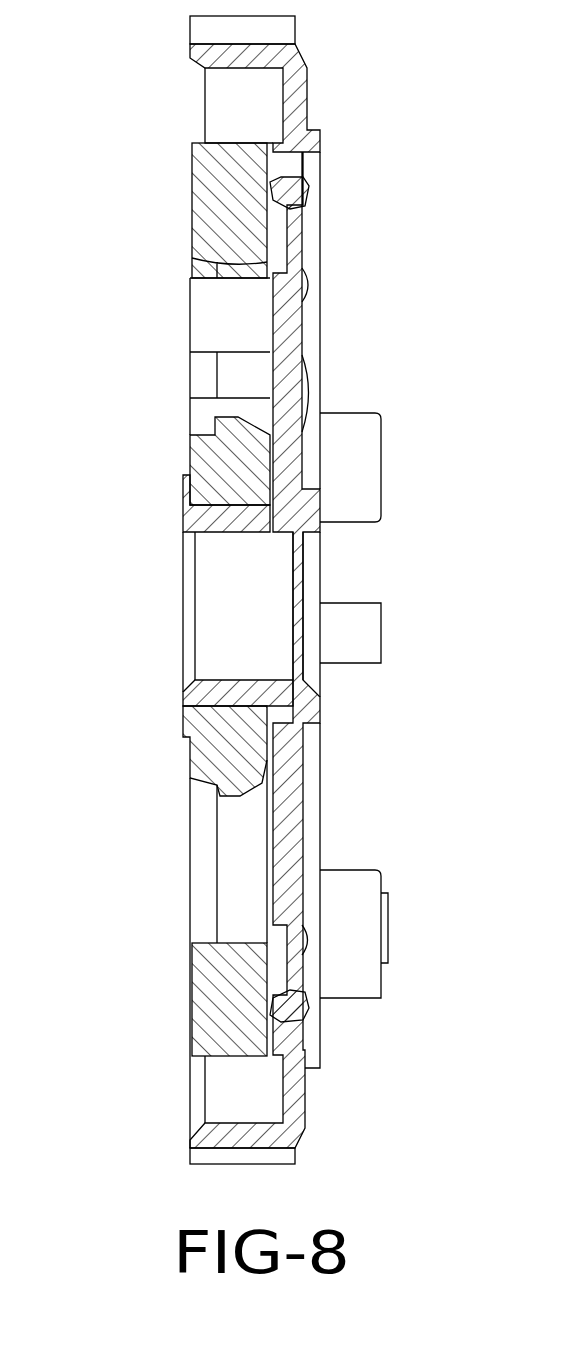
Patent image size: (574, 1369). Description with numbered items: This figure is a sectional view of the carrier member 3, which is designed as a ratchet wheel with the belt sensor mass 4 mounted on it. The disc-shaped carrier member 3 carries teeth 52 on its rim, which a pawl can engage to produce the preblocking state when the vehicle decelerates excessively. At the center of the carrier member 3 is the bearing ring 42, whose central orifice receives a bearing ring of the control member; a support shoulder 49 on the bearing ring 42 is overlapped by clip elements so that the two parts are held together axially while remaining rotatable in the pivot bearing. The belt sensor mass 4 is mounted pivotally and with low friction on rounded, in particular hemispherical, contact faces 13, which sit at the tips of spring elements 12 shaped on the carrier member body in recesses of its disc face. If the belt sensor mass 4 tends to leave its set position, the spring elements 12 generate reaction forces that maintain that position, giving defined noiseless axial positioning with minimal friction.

The teeth 52 is at (203, 28).
The carrier member 3 is at (293, 97).
The rounded contact faces 13 is at (270, 190).
The spring elements 12 is at (298, 207).
The belt sensor mass 4 is at (203, 217).
The bearing ring 42 is at (233, 520).
The support shoulder 49 is at (277, 540).